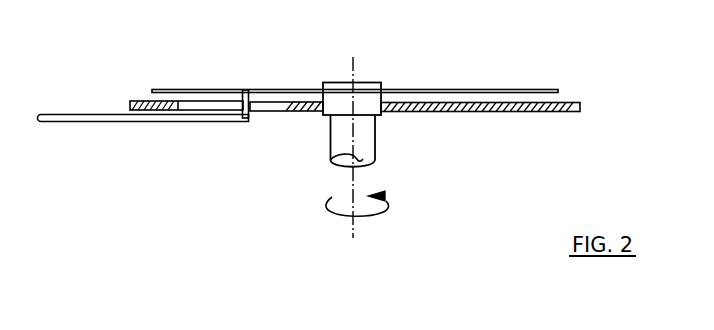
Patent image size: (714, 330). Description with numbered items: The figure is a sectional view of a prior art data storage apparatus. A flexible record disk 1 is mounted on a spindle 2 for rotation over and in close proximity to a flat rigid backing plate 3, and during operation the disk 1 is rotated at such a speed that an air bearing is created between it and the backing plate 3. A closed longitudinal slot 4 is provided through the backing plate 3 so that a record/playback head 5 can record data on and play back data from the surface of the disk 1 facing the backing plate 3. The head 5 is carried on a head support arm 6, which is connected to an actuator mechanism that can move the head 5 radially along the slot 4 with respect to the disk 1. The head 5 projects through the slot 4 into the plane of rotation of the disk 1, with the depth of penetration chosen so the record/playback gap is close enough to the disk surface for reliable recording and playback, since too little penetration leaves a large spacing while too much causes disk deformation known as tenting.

The flexible record disk 1 is at (527, 91).
The spindle 2 is at (369, 139).
The backing plate 3 is at (529, 113).
The closed longitudinal slot 4 is at (285, 111).
The record/playback head 5 is at (249, 113).
The head support arm 6 is at (118, 122).